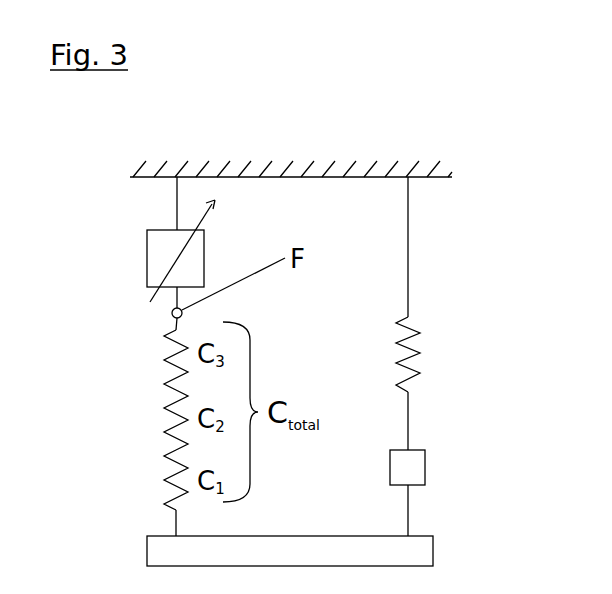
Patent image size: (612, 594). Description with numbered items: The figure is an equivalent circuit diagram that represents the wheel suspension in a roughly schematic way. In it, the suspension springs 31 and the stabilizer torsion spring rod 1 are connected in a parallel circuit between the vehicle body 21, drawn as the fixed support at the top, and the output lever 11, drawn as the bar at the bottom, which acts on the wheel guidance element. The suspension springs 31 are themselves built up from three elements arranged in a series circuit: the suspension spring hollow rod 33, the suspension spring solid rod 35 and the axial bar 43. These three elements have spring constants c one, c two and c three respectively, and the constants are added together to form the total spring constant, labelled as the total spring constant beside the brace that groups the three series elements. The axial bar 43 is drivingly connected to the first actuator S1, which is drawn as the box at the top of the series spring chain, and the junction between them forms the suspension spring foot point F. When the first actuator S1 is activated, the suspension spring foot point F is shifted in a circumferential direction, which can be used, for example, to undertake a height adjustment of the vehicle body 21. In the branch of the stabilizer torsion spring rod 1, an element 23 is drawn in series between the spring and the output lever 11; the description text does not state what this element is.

The stabilizer torsion spring rod 1 is at (410, 352).
The output lever 11 is at (433, 549).
The vehicle body 21 is at (430, 178).
The damping element 23 is at (425, 467).
The suspension springs 31 is at (103, 417).
The suspension spring hollow rod 33 is at (134, 480).
The suspension spring solid rod 35 is at (162, 408).
The axial bar 43 is at (163, 340).
The first actuator S1 is at (147, 250).